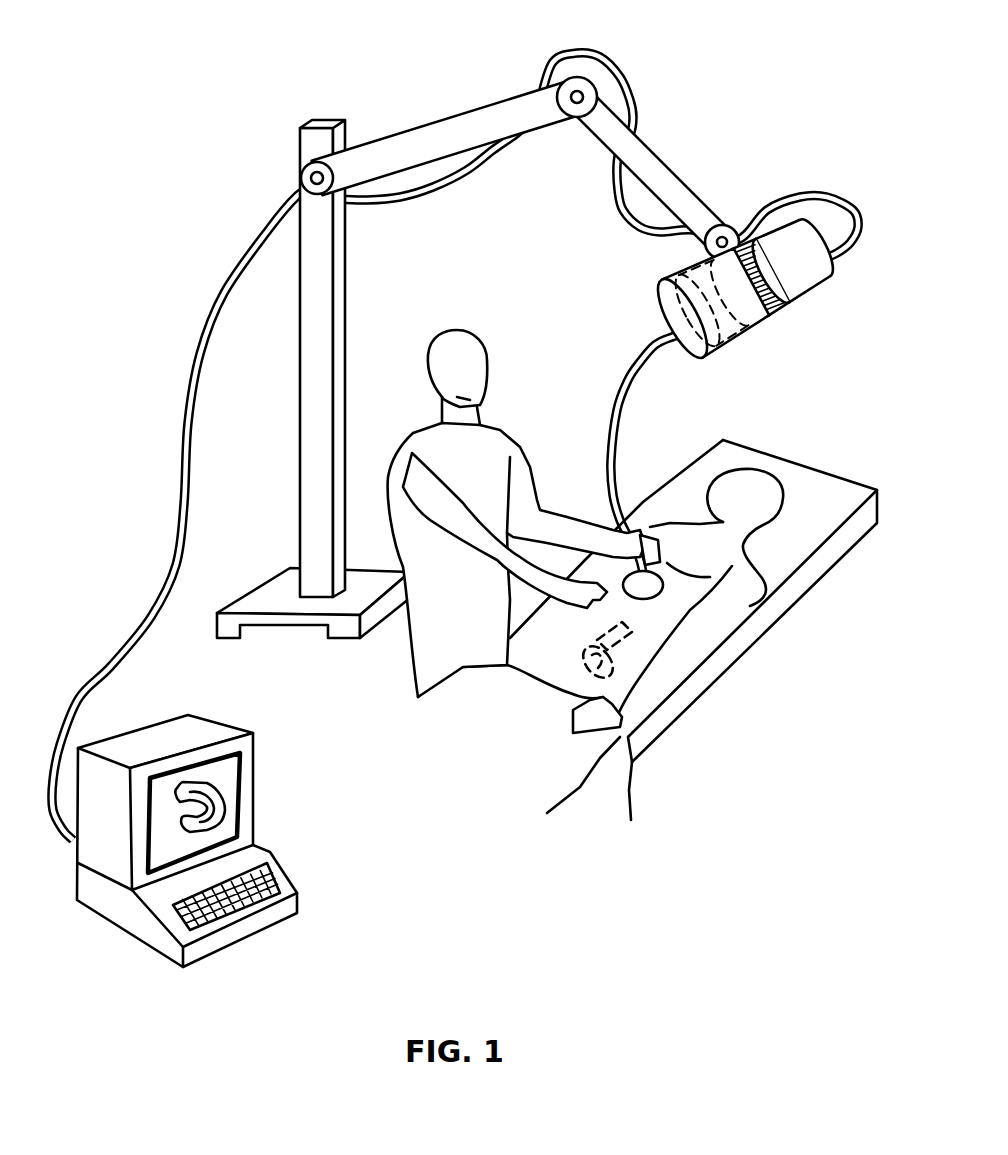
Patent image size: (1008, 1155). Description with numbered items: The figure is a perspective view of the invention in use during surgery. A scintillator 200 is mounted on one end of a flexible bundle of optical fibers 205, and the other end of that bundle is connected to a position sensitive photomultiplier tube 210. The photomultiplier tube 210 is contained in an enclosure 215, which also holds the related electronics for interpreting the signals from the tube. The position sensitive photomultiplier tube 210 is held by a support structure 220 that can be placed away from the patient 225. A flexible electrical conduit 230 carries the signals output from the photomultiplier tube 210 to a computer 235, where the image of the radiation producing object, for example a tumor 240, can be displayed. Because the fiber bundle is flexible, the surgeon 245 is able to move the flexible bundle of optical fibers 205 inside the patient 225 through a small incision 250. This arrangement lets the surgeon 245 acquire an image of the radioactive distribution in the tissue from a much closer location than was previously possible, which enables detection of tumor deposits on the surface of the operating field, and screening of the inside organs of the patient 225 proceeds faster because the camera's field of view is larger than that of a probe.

The scintillator 200 is at (580, 652).
The flexible bundle of optical fibers 205 is at (640, 620).
The position sensitive photomultiplier tube 210 is at (718, 277).
The enclosure 215 is at (812, 305).
The support structure 220 is at (335, 125).
The patient 225 is at (778, 468).
The flexible electrical conduit 230 is at (794, 190).
The computer 235 is at (253, 805).
The tumor 240 is at (663, 723).
The surgeon 245 is at (455, 328).
The small incision 250 is at (662, 584).